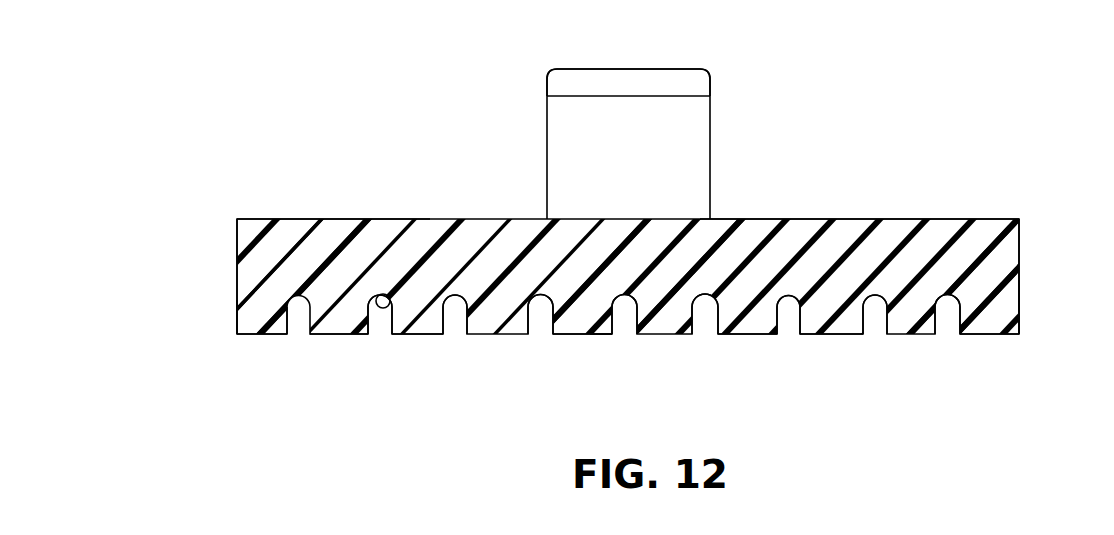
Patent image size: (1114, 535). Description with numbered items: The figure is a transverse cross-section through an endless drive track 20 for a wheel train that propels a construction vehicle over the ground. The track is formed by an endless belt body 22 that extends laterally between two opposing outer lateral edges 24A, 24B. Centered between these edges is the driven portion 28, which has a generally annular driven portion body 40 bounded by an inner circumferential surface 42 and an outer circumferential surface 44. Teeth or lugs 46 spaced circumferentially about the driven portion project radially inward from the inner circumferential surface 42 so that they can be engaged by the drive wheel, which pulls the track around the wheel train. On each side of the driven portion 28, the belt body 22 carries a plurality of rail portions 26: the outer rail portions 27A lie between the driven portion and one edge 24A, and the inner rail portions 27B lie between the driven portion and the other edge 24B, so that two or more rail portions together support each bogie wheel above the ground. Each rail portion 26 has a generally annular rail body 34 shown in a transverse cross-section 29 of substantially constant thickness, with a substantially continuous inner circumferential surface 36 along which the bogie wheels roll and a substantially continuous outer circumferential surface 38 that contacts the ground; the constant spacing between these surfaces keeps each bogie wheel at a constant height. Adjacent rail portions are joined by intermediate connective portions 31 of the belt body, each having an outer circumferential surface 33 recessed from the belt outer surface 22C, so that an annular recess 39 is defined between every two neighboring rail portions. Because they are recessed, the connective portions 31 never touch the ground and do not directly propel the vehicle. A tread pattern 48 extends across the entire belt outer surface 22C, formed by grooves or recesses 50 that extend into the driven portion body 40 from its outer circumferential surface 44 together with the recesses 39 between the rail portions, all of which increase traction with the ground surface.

The endless drive track 20 is at (307, 102).
The belt body 22 is at (662, 387).
The belt outer surface 22C is at (767, 337).
The outer lateral edge 24A is at (237, 253).
The outer lateral edge 24B is at (1020, 300).
The rail portion 26 is at (258, 217).
The outer rail portion 27A is at (246, 218).
The inner rail portion 27B is at (735, 222).
The driven portion 28 is at (590, 270).
The transverse cross-section 29 is at (258, 312).
The connective portion 31 is at (295, 235).
The outer circumferential surface of connective portion 33 is at (387, 296).
The rail body 34 is at (237, 295).
The inner circumferential surface 36 is at (272, 218).
The outer circumferential surface 38 is at (253, 335).
The annular recess 39 is at (377, 320).
The driven portion body 40 is at (653, 282).
The inner circumferential surface of driven portion 42 is at (637, 218).
The outer circumferential surface of driven portion 44 is at (573, 335).
The teeth or lugs 46 is at (688, 118).
The tread pattern 48 is at (603, 337).
The grooves or recesses 50 is at (538, 320).